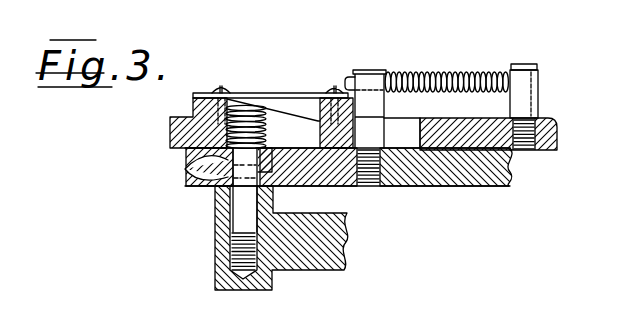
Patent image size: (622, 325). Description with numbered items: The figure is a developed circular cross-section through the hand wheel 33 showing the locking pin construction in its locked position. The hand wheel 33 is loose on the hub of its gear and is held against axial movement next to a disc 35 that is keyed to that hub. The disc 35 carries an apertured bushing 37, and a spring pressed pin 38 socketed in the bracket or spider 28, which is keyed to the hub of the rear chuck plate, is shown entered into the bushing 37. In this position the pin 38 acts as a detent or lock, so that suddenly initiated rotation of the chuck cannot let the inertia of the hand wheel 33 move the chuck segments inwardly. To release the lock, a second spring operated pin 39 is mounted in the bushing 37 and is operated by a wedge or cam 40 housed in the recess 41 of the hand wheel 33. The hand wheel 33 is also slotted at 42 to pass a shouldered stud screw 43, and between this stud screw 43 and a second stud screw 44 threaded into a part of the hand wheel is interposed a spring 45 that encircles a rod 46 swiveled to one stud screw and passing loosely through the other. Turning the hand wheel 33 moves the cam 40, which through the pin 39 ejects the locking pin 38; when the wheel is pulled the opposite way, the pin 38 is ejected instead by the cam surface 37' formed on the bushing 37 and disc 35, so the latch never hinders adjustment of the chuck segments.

The bracket or spider 28 is at (338, 240).
The hand wheel 33 is at (558, 132).
The disc 35 is at (508, 175).
The apertured bushing 37 is at (189, 167).
The cam surface 37' is at (202, 199).
The spring pressed pin 38 is at (237, 210).
The second spring operated pin 39 is at (270, 169).
The wedge or cam 40 is at (296, 99).
The recess 41 is at (261, 123).
The slot 42 is at (402, 133).
The shouldered stud screw 43 is at (382, 63).
The second stud screw 44 is at (530, 96).
The spring 45 is at (474, 75).
The rod 46 is at (353, 77).